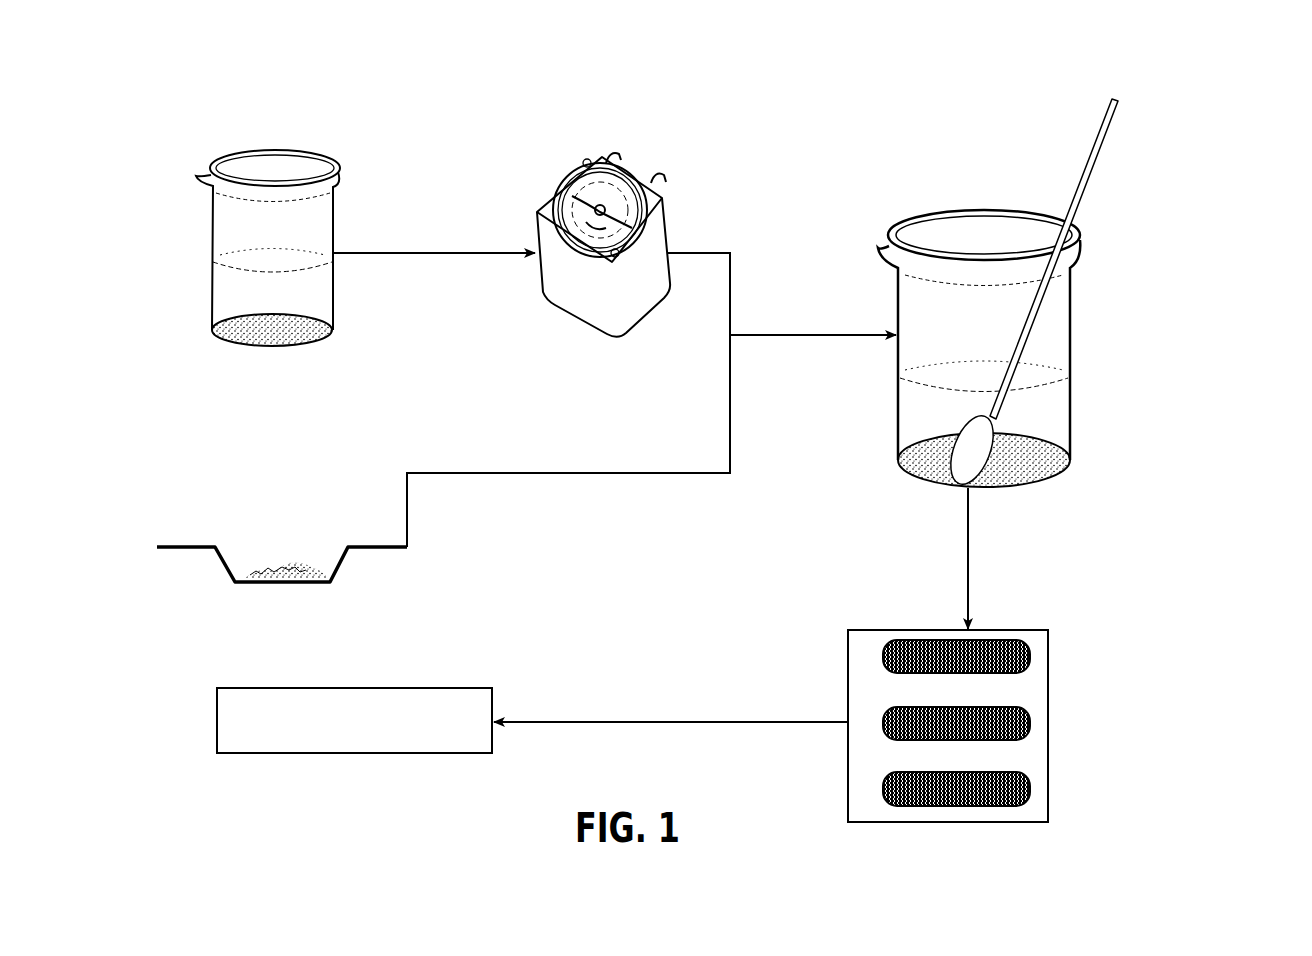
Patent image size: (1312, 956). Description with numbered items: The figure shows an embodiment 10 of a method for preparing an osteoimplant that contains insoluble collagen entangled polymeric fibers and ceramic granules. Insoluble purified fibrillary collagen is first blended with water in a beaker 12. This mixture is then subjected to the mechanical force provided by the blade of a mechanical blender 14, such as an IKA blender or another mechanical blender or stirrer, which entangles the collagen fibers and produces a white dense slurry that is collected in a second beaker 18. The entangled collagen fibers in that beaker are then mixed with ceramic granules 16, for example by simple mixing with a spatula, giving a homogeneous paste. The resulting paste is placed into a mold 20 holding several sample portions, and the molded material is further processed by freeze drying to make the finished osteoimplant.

The method embodiment 10 is at (1217, 102).
The beaker 12 is at (221, 141).
The mechanical blender 14 is at (550, 170).
The ceramic granules 16 is at (200, 534).
The beaker 18 is at (885, 194).
The mold 20 is at (1094, 620).